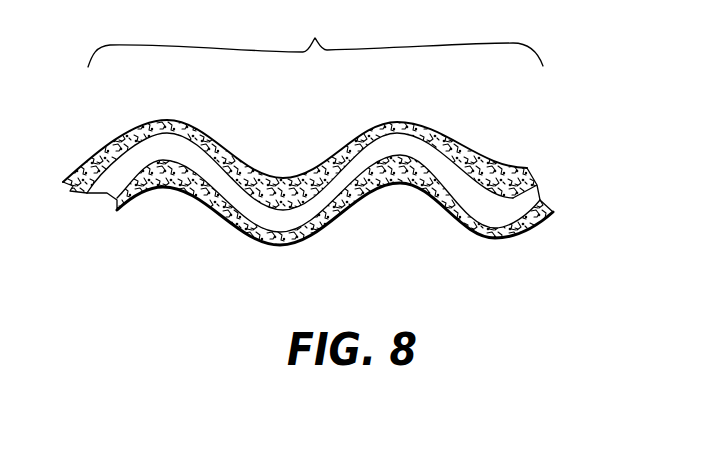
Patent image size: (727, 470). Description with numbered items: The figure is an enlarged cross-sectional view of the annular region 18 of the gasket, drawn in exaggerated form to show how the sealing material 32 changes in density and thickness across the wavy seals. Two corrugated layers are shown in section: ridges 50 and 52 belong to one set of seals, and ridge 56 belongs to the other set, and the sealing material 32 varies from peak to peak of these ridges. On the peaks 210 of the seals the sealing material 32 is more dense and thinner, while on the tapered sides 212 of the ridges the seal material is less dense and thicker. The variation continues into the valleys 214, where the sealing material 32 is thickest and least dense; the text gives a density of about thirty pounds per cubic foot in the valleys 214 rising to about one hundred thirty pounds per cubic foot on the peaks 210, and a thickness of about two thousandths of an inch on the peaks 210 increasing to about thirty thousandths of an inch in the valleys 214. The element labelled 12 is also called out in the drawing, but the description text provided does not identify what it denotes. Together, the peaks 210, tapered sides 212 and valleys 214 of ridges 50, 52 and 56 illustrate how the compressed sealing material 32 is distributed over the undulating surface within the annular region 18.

The second corrugated sheet 12 is at (545, 199).
The annular region 18 is at (315, 37).
The sealing material 32 is at (450, 143).
The ridge 50 is at (158, 140).
The ridge 52 is at (395, 119).
The ridge 56 is at (305, 216).
The peaks 210 is at (173, 120).
The tapered sides 212 is at (227, 141).
The valleys 214 is at (272, 180).